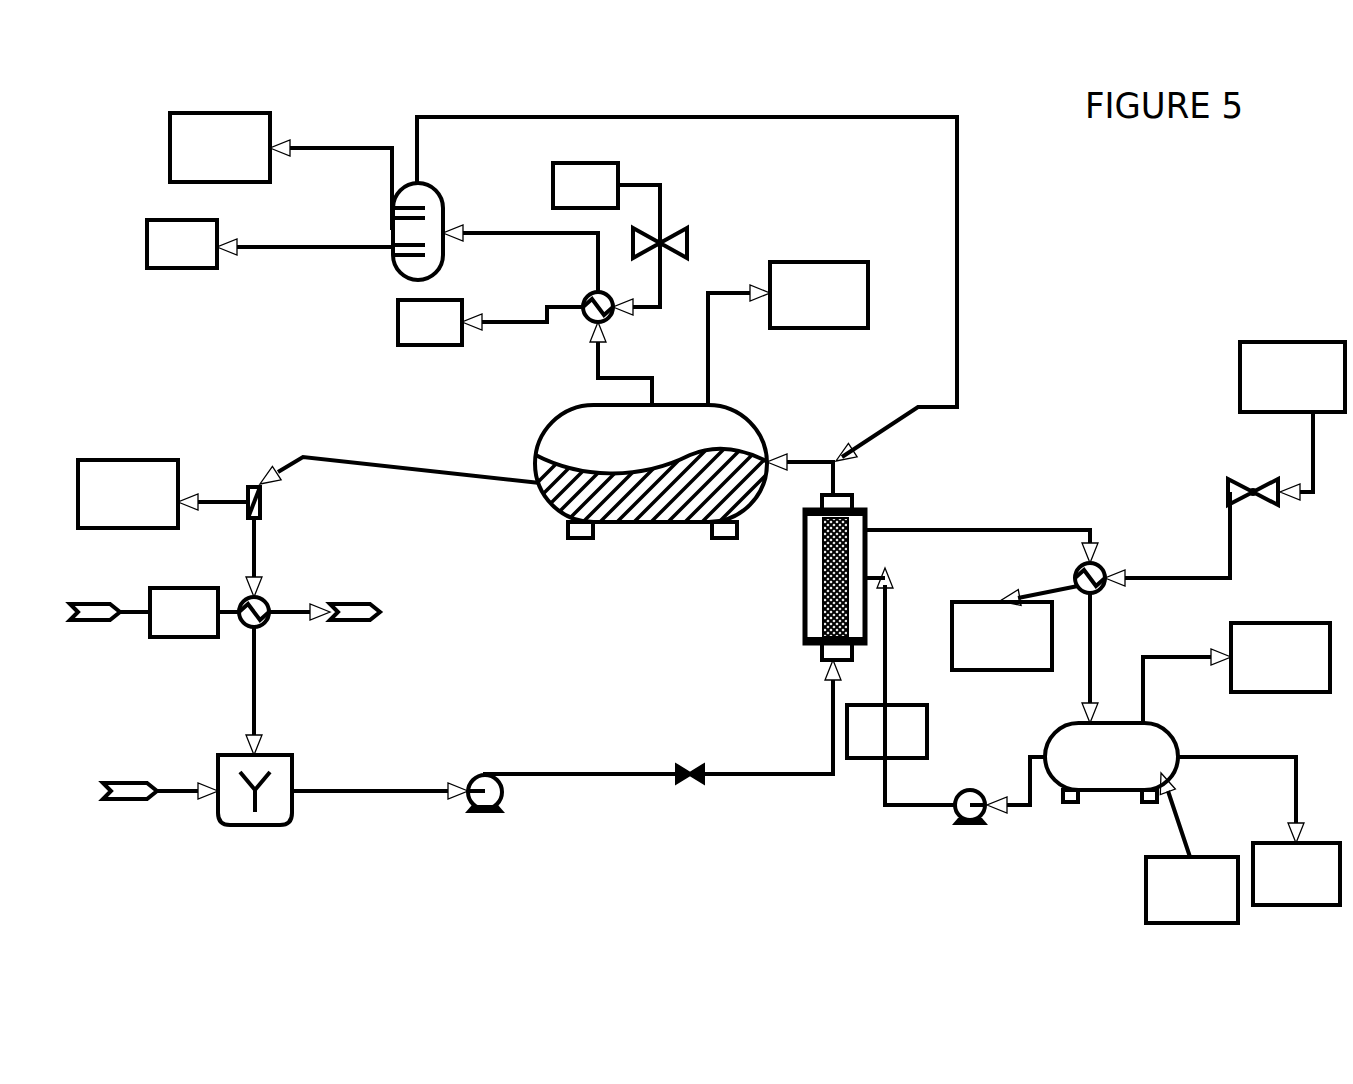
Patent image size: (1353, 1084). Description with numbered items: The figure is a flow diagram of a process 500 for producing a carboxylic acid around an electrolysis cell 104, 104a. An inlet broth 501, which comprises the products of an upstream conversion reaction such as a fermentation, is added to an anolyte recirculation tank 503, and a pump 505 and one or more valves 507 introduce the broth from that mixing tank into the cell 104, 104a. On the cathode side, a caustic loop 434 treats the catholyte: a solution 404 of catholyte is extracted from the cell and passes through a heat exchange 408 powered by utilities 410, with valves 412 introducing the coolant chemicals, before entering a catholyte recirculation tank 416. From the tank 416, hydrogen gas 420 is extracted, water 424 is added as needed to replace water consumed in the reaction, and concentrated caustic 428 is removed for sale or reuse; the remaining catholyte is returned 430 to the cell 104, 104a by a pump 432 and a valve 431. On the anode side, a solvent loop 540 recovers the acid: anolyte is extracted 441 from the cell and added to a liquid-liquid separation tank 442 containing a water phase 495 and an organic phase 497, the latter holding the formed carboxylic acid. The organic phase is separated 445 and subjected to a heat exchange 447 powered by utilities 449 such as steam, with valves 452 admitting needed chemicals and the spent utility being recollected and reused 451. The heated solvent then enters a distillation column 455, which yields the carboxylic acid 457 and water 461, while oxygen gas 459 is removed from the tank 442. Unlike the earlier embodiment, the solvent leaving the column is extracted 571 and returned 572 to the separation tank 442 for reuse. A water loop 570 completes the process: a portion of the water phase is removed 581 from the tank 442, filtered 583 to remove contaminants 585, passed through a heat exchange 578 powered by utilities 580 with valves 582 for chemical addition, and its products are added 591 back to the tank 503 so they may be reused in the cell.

The process 500 is at (1088, 254).
The extraction of solvent from distillation column 571 is at (417, 117).
The distillation column 455 is at (443, 198).
The water 461 is at (281, 171).
The carboxylic acid 457 is at (270, 244).
The solvent loop 540 is at (243, 286).
The utilities 449 is at (606, 239).
The valves 452 is at (690, 247).
The heat exchange/temperature exchange 447 is at (588, 299).
The recollected and reused utility 451 is at (490, 322).
The separation of second solvent 445 is at (597, 378).
The oxygen gas 459 is at (788, 333).
The liquid-liquid separation tank 442 is at (646, 505).
The second solvent (organic phase) 497 is at (607, 445).
The first solvent (water phase) 495 is at (563, 505).
The return of solvent to separation tank 572 is at (800, 458).
The electrolysis cell 104 is at (719, 595).
The electrolysis cell 104a is at (805, 579).
The extraction of anolyte 441 is at (836, 480).
The solution of catholyte 404 is at (1016, 526).
The heat exchange/temperature exchange 408 is at (1100, 565).
The utilities 410 is at (1148, 506).
The valves 412 is at (1233, 485).
The catholyte recirculation tank 416 is at (1100, 790).
The caustic loop 434 is at (1104, 877).
The hydrogen gas 420 is at (1236, 673).
The caustic (NaOH) 428 is at (1259, 831).
The water 424 is at (1192, 846).
The return of catholyte to cell 430 is at (1033, 752).
The pump 432 is at (955, 820).
The valve 431 is at (901, 686).
The contaminants 585 is at (163, 494).
The filtering 583 is at (262, 505).
The removal of water phase 581 is at (330, 462).
The water loop 570 is at (236, 452).
The valves 582 is at (179, 612).
The heat exchange/temperature exchange 578 is at (265, 628).
The utilities 580 is at (95, 625).
The addition of heat exchange products to tank 591 is at (253, 670).
The inlet broth 501 is at (124, 803).
The anolyte recirculation tank 503 is at (240, 826).
The pump 505 is at (483, 813).
The valves 507 is at (690, 782).